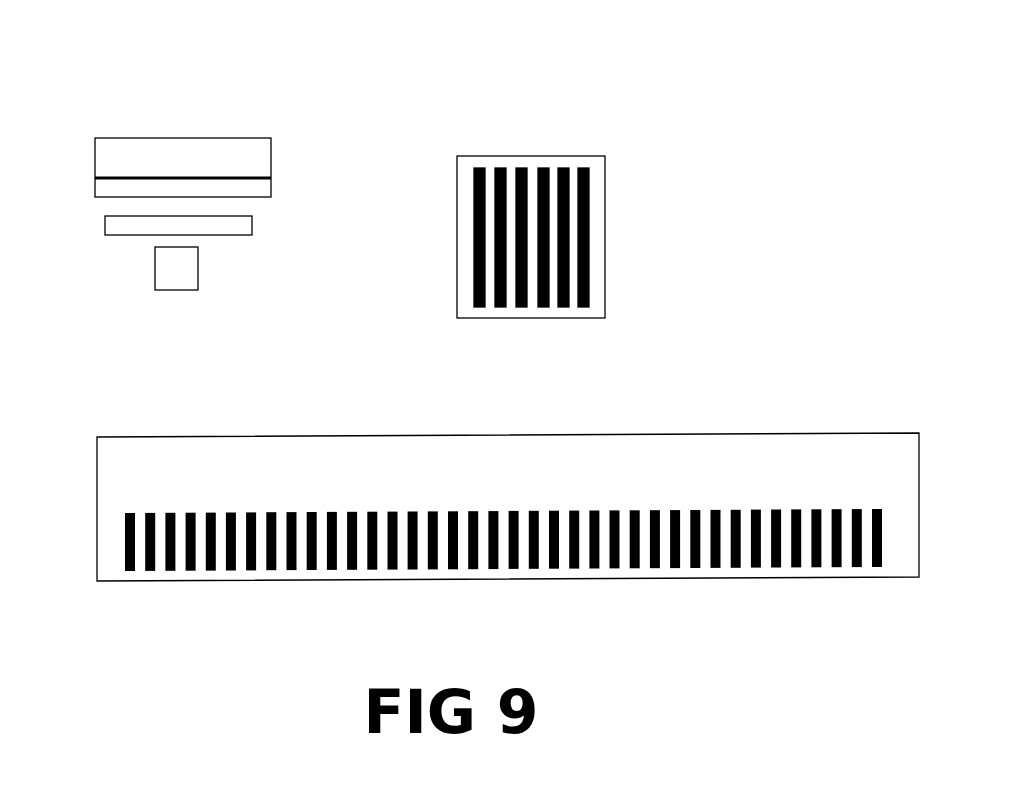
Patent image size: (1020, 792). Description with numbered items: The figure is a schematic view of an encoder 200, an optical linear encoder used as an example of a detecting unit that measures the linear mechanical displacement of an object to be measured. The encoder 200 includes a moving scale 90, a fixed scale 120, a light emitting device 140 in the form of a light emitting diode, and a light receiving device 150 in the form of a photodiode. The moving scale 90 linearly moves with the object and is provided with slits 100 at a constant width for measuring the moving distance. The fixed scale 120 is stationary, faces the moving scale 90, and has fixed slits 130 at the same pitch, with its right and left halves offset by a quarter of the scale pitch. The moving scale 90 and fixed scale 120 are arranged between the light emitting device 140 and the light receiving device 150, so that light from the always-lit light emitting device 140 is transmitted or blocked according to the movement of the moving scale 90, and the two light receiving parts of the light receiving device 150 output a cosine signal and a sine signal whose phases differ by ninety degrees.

The encoder 200 is at (112, 90).
The light receiving device 150 is at (219, 128).
The fixed scale 120 is at (286, 173).
The fixed slits 130 is at (546, 149).
The light emitting device 140 is at (144, 287).
The moving scale 90 is at (262, 251).
The slits 100 is at (278, 501).